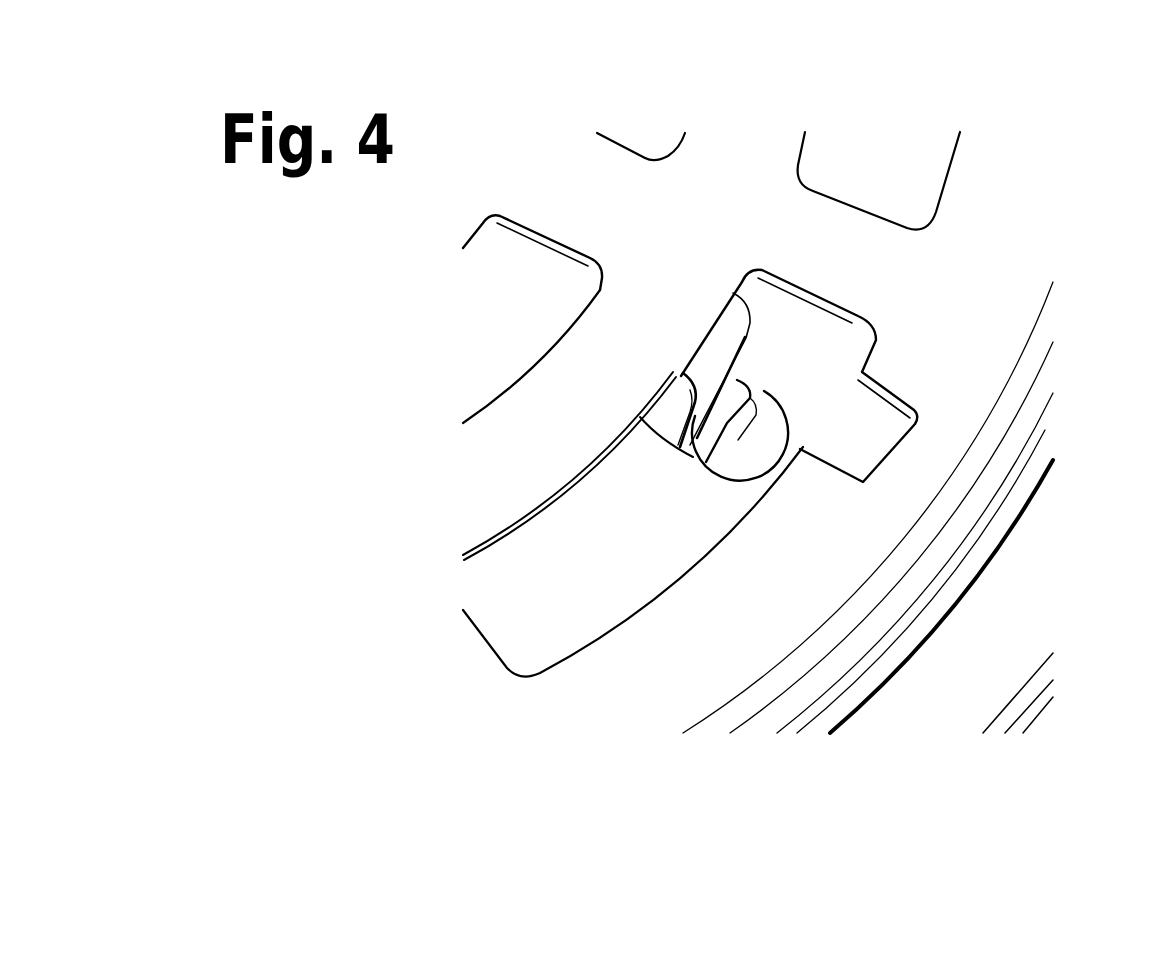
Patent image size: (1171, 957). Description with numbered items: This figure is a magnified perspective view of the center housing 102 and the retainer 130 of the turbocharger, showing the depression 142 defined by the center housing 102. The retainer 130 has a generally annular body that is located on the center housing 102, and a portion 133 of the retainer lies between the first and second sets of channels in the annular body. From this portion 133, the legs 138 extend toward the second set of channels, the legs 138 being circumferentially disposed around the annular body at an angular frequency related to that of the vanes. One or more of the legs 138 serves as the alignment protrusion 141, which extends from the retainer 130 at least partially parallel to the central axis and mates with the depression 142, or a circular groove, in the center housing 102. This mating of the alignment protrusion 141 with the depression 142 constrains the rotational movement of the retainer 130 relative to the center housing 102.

The center housing 102 is at (838, 409).
The retainer 130 is at (654, 222).
The portion of the retainer 133 is at (540, 438).
The legs 138 is at (678, 428).
The alignment protrusion 141 is at (678, 428).
The depression 142 is at (753, 443).